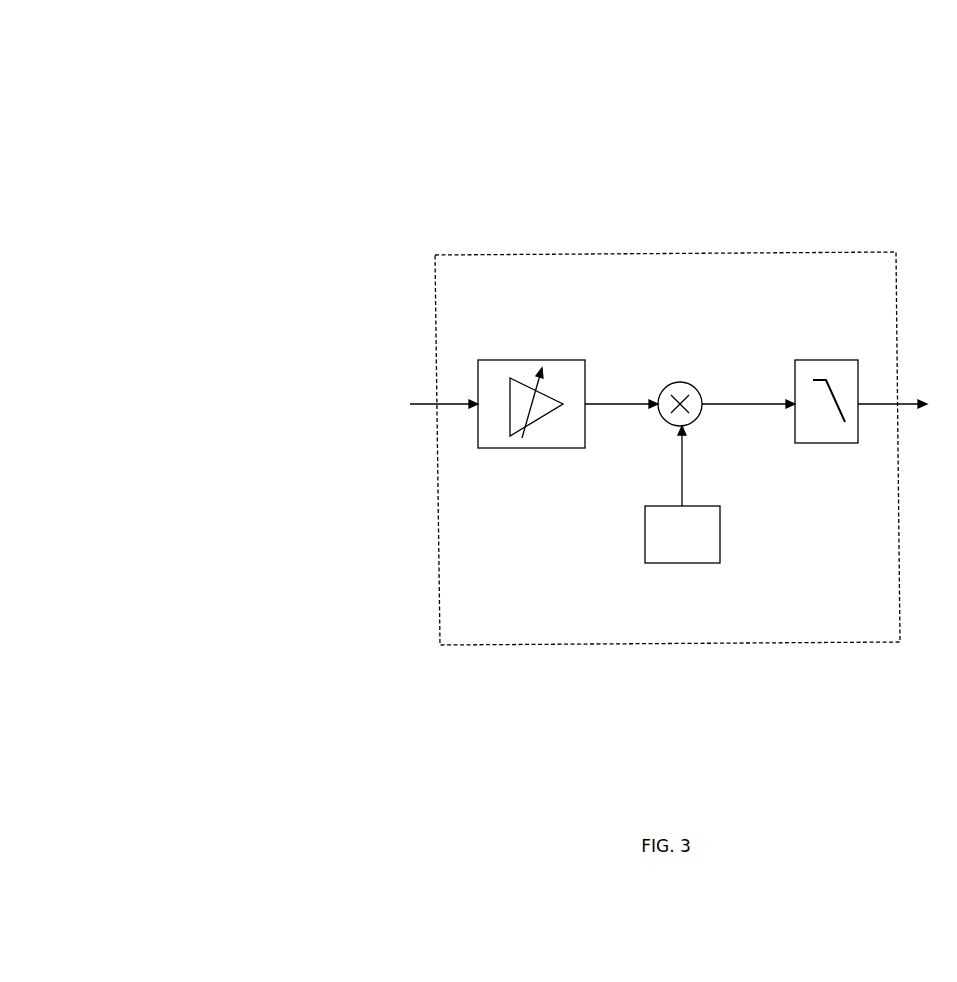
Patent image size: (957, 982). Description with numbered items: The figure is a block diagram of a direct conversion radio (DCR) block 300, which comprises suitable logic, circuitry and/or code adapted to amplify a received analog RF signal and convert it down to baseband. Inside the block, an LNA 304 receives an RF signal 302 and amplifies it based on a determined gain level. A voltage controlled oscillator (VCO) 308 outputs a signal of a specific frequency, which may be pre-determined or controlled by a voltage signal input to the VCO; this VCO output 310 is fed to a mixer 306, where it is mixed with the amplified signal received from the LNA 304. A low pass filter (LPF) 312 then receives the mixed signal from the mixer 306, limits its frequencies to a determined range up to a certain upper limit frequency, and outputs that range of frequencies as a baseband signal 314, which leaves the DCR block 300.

The direct conversion radio (DCR) block 300 is at (152, 116).
The RF signal 302 is at (428, 403).
The LNA 304 is at (563, 359).
The mixer 306 is at (682, 381).
The voltage controlled oscillator (VCO) 308 is at (697, 564).
The local oscillator signal 310 is at (680, 478).
The low pass filter (LPF) 312 is at (825, 359).
The baseband signal 314 is at (896, 400).